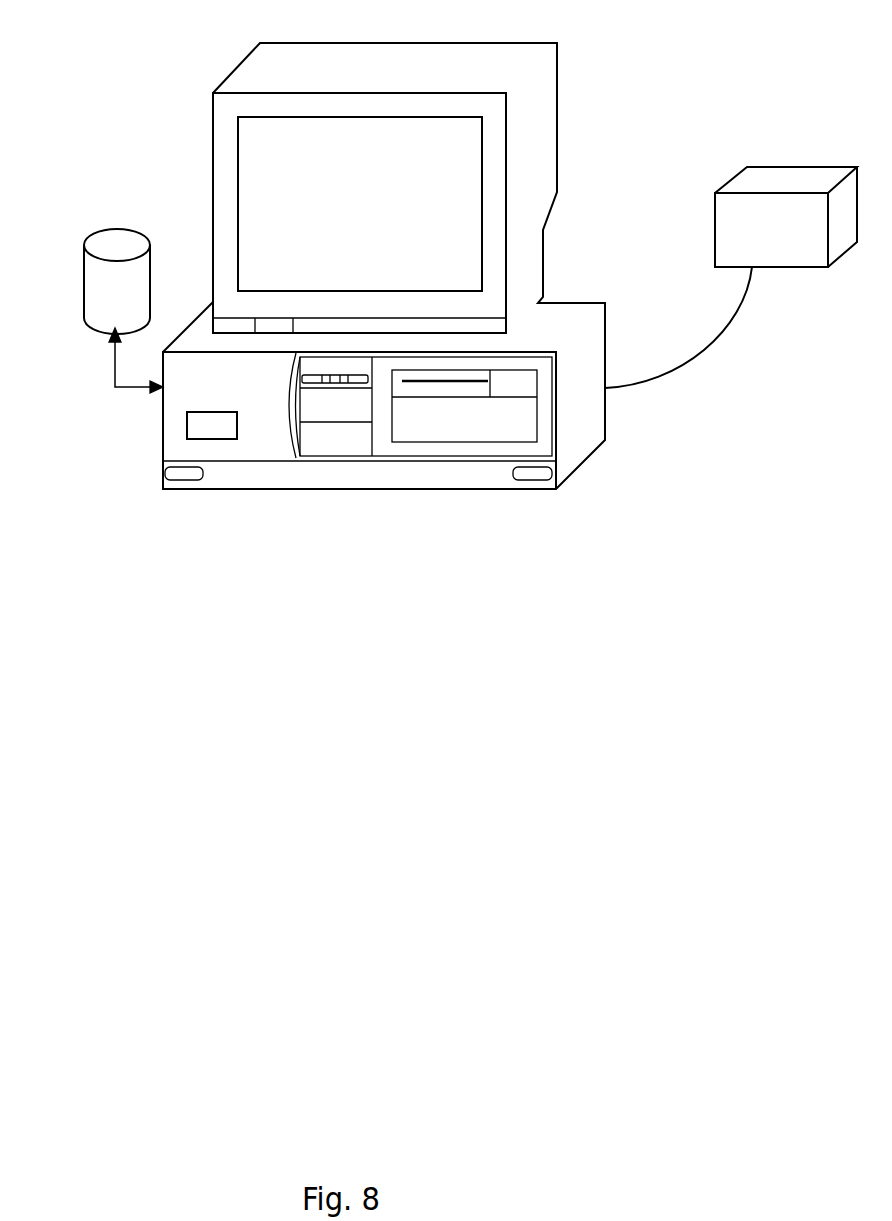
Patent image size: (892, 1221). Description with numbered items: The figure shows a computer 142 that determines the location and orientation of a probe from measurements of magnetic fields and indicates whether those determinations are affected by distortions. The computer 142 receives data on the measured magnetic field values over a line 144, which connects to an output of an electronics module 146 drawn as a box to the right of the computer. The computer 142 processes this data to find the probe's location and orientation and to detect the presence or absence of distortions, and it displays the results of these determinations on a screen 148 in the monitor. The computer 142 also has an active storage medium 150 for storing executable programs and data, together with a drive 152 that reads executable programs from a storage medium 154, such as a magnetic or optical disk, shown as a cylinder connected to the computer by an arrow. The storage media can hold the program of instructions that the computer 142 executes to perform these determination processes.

The computer 142 is at (213, 93).
The line 144 is at (727, 340).
The electronics module 146 is at (715, 225).
The screen 148 is at (457, 177).
The active storage medium 150 is at (200, 428).
The drive 152 is at (478, 388).
The storage medium 154 is at (82, 280).